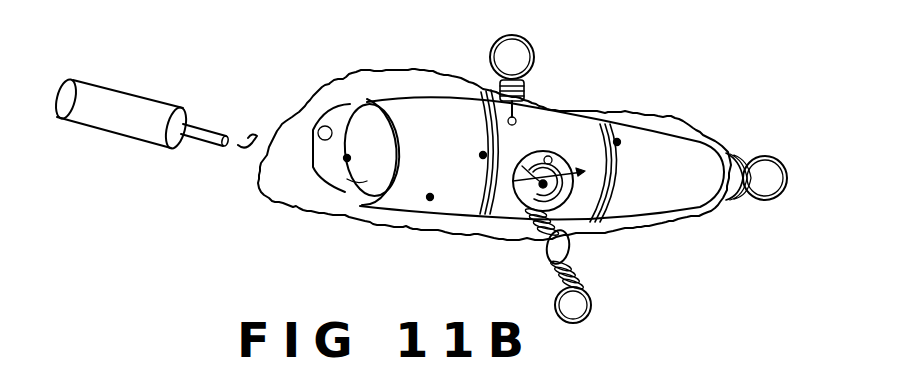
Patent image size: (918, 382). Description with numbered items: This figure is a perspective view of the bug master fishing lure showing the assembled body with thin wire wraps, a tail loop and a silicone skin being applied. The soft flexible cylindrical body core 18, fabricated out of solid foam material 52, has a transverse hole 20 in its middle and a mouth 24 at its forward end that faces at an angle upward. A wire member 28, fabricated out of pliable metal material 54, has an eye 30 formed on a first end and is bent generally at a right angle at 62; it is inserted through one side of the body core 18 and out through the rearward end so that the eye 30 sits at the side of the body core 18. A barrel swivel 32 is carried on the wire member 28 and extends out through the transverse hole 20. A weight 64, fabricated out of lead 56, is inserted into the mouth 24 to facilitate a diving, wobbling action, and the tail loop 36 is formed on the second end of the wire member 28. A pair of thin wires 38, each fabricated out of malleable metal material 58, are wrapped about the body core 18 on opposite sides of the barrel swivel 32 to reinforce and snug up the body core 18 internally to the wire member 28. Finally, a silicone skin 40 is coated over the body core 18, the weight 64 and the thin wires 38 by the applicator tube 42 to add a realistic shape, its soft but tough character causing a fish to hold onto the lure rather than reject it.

The body core 18 is at (665, 140).
The transverse hole 20 is at (575, 163).
The mouth 24 is at (343, 190).
The wire member 28 is at (567, 135).
The eye 30 is at (533, 62).
The barrel swivel 32 is at (568, 254).
The tail loop 36 is at (770, 157).
The thin wire 38 is at (487, 92).
The silicone skin 40 is at (287, 114).
The applicator tube 42 is at (137, 105).
The solid foam material 52 is at (430, 200).
The pliable metal material 54 is at (537, 218).
The lead 56 is at (347, 158).
The malleable metal material 58 is at (483, 152).
The right angle bend 62 is at (527, 181).
The weight 64 is at (353, 113).